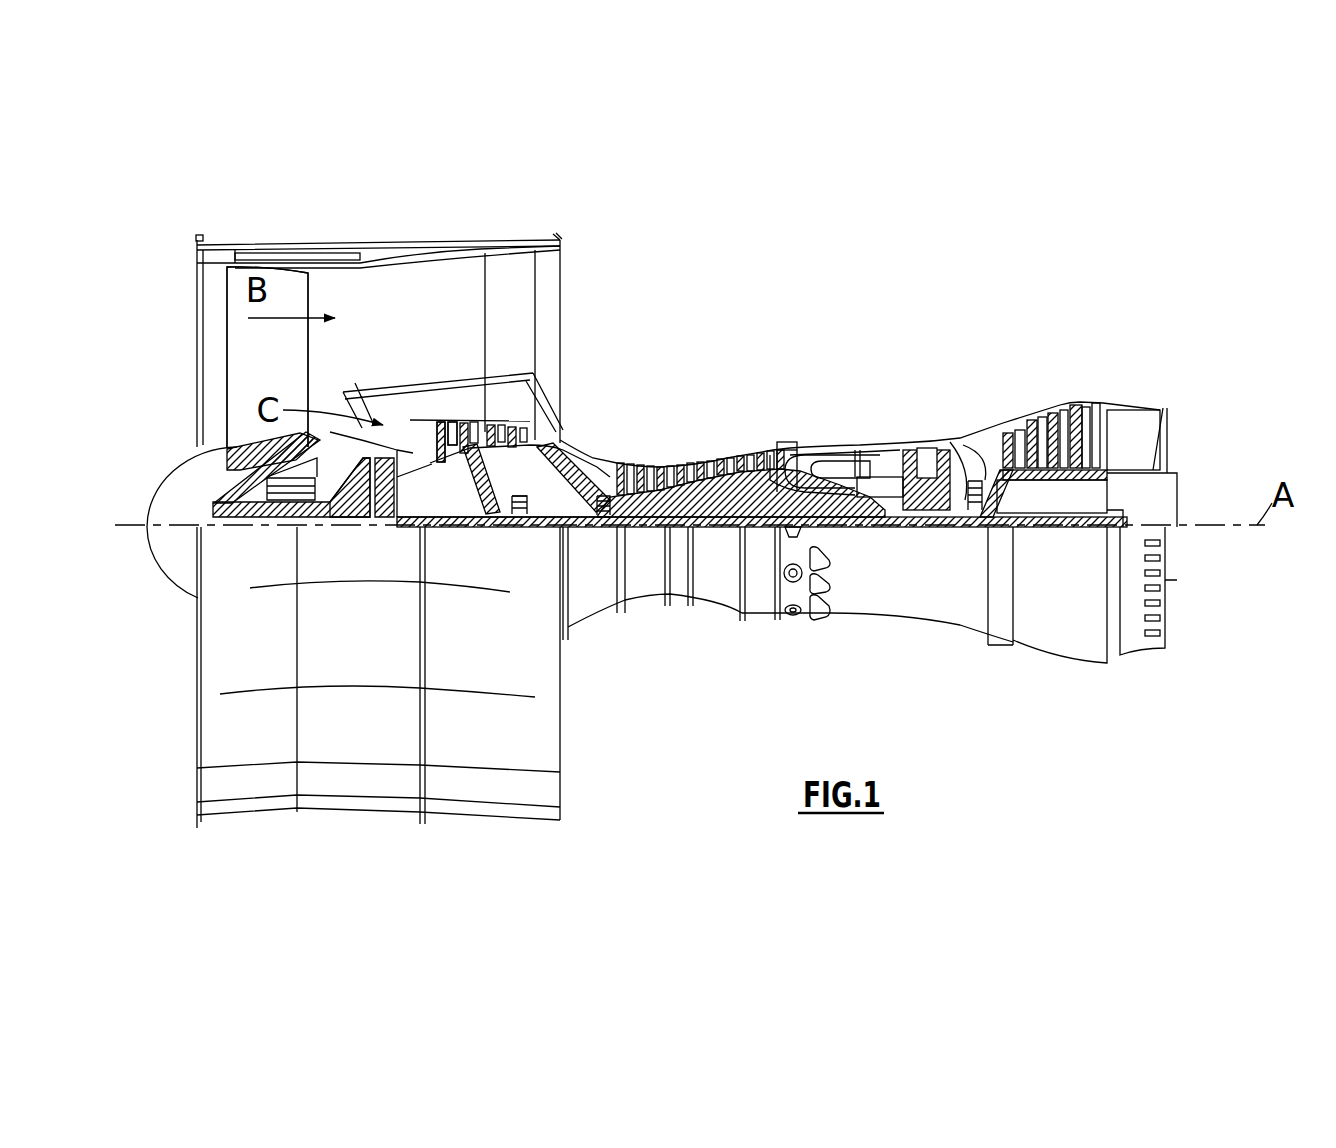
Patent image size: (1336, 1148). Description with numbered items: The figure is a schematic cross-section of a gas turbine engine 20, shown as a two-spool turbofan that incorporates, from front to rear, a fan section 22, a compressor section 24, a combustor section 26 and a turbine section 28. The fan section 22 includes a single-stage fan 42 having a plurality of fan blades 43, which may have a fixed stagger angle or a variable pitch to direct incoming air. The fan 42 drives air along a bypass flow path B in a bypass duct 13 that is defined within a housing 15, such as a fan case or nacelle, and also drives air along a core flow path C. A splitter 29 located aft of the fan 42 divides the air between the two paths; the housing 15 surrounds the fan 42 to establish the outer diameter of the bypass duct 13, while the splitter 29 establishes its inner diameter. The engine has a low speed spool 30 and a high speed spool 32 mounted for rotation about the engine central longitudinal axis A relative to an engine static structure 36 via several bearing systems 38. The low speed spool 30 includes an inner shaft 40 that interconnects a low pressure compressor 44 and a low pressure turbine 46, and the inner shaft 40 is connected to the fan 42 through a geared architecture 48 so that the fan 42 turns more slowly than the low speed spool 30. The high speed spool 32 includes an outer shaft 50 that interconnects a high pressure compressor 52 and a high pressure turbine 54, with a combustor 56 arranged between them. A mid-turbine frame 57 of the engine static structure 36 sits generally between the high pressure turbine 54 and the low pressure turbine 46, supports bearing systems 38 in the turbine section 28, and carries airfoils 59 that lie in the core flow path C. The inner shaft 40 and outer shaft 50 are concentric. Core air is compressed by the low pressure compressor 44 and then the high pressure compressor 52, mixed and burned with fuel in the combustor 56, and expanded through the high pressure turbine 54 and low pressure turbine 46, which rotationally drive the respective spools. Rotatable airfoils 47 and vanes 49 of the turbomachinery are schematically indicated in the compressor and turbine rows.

The bypass duct 13 is at (432, 272).
The housing 15 is at (381, 243).
The gas turbine engine 20 is at (835, 300).
The fan section 22 is at (312, 236).
The compressor section 24 is at (610, 433).
The combustor section 26 is at (835, 420).
The turbine section 28 is at (1004, 390).
The splitter 29 is at (352, 390).
The low speed spool 30 is at (718, 537).
The high speed spool 32 is at (763, 470).
The engine static structure 36 is at (758, 620).
The bearing systems 38 is at (517, 520).
The inner shaft 40 is at (581, 533).
The fan 42 is at (252, 372).
The fan blades 43 is at (302, 373).
The low pressure compressor 44 is at (487, 435).
The low pressure turbine 46 is at (1025, 420).
The rotatable airfoils 47 is at (441, 438).
The geared architecture 48 is at (384, 517).
The vanes 49 is at (462, 430).
The outer shaft 50 is at (835, 520).
The high pressure compressor 52 is at (702, 457).
The high pressure turbine 54 is at (905, 455).
The combustor 56 is at (836, 465).
The mid-turbine frame 57 is at (961, 440).
The airfoils 59 is at (980, 480).